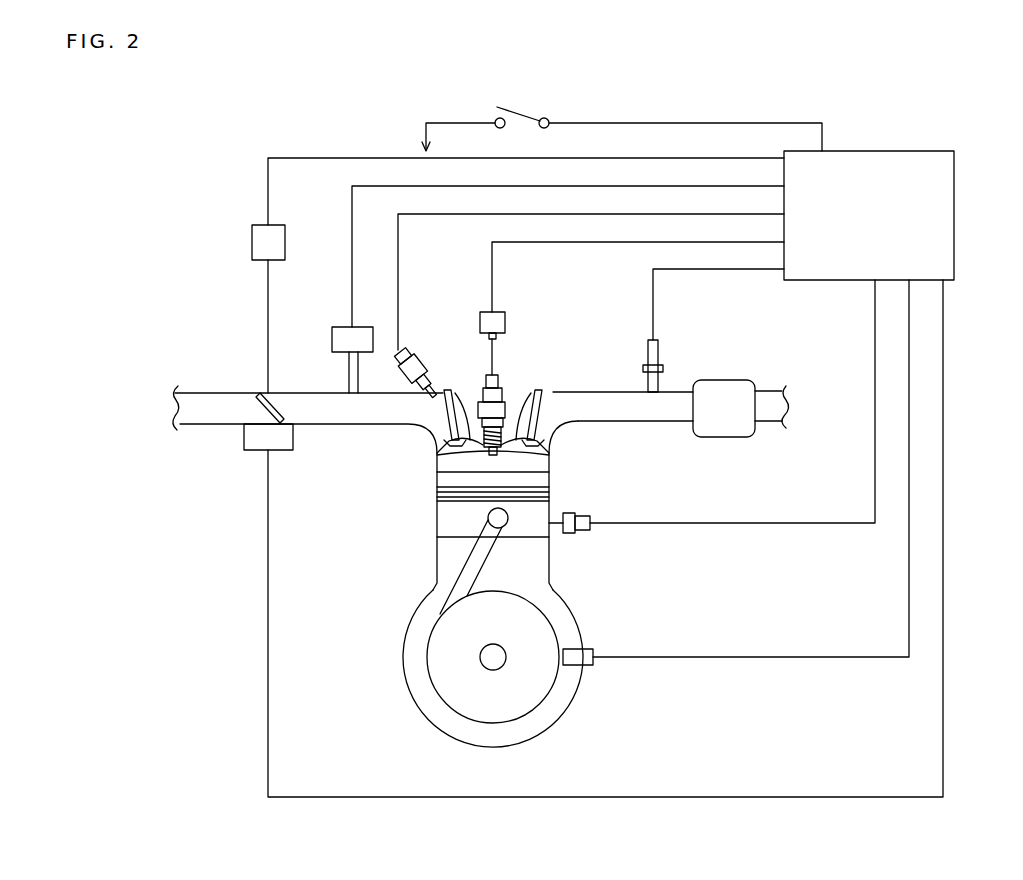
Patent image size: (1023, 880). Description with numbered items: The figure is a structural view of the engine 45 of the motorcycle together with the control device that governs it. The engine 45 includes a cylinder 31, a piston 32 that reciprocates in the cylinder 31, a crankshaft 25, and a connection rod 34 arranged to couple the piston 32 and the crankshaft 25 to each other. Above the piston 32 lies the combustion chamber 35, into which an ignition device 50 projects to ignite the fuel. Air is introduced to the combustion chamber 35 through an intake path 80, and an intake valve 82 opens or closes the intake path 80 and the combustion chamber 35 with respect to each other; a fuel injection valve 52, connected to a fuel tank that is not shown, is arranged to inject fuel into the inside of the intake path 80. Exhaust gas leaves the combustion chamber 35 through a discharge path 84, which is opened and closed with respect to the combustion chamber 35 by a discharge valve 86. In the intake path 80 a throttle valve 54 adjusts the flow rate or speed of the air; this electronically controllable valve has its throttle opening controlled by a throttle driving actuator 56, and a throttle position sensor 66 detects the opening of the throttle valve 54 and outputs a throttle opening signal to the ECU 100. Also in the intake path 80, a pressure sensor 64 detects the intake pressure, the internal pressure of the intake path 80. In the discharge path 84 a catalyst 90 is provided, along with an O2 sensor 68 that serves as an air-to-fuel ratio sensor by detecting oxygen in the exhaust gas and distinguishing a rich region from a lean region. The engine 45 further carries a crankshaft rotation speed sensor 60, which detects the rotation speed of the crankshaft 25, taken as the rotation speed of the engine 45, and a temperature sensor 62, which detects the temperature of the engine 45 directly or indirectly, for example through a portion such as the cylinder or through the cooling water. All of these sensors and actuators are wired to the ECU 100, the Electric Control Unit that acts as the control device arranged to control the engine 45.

The ECU 100 is at (930, 151).
The throttle driving actuator 56 is at (252, 243).
The pressure sensor 64 is at (340, 327).
The intake path 80 is at (195, 400).
The throttle valve 54 is at (258, 393).
The throttle position sensor 66 is at (258, 452).
The fuel injection valve 52 is at (424, 362).
The ignition device 50 is at (500, 392).
The combustion chamber 35 is at (442, 463).
The intake valve 82 is at (464, 428).
The discharge valve 86 is at (526, 413).
The discharge path 84 is at (665, 421).
The O2 sensor 68 is at (643, 352).
The catalyst 90 is at (735, 380).
The cylinder 31 is at (436, 517).
The piston 32 is at (549, 478).
The temperature sensor 62 is at (584, 513).
The connection rod 34 is at (473, 557).
The engine 45 is at (571, 718).
The crankshaft 25 is at (491, 671).
The crankshaft rotation speed sensor 60 is at (600, 648).